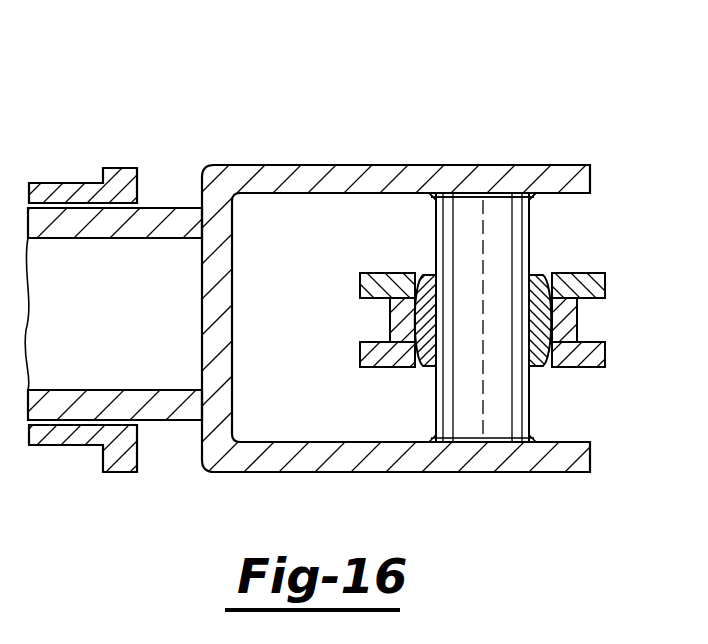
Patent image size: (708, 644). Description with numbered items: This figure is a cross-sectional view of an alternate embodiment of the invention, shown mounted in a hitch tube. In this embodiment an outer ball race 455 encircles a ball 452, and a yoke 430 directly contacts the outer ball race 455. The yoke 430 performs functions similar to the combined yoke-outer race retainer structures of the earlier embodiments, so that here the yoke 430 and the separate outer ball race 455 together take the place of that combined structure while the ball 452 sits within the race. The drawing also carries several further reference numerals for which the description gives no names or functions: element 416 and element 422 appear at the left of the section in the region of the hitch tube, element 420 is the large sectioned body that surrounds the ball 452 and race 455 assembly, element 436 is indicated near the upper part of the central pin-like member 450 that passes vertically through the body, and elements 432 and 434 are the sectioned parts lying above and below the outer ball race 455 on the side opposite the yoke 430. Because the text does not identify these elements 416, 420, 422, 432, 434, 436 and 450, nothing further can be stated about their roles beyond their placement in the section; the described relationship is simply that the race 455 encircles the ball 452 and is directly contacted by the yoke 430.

The flange 416 is at (122, 168).
The tube 422 is at (168, 206).
The housing 420 is at (421, 172).
The pin shank surface 436 is at (432, 274).
The upper washer 432 is at (368, 273).
The outer ball race 455 is at (390, 319).
The lower washer 434 is at (360, 355).
The ball 452 is at (417, 367).
The pin 450 is at (481, 420).
The yoke 430 is at (605, 283).